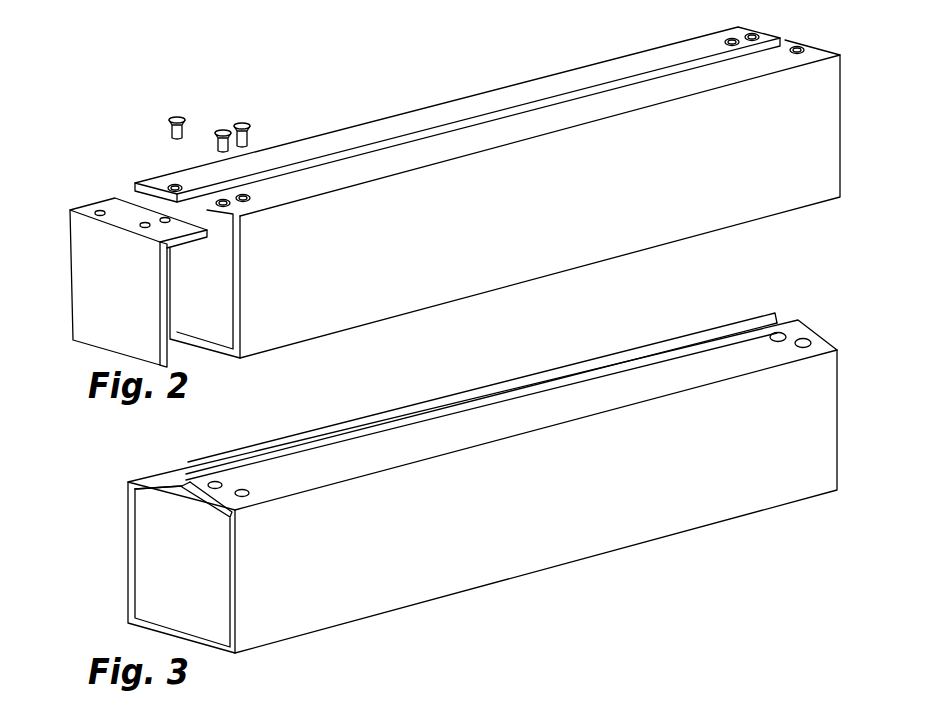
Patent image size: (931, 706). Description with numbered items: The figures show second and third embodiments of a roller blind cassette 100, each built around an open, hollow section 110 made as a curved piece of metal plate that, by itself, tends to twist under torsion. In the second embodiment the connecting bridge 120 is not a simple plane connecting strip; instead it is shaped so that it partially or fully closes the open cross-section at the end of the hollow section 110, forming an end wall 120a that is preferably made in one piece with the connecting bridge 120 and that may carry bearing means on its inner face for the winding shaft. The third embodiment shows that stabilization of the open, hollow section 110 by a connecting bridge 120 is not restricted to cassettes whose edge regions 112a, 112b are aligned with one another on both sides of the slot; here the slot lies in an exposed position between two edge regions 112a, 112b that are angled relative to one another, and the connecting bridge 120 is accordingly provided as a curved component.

In FIG. 2, the roller blind cassette 100 is at (412, 100).
In FIG. 3, the roller blind cassette 100 is at (467, 380).
In FIG. 2, the hollow section 110 is at (493, 112).
In FIG. 3, the hollow section 110 is at (398, 408).
In FIG. 3, the edge region 112a is at (172, 486).
In FIG. 3, the edge region 112b is at (208, 497).
In FIG. 2, the connecting bridge 120 is at (111, 251).
In FIG. 3, the connecting bridge 120 is at (158, 483).
In FIG. 2, the end wall 120a is at (135, 212).